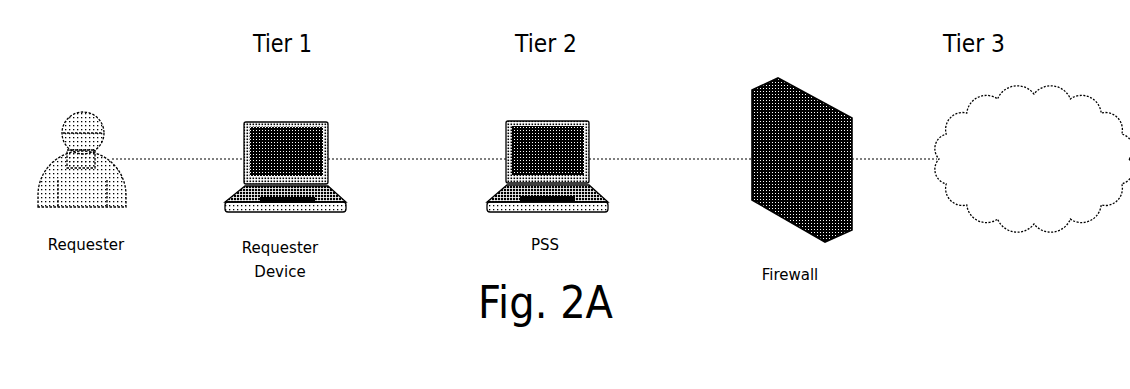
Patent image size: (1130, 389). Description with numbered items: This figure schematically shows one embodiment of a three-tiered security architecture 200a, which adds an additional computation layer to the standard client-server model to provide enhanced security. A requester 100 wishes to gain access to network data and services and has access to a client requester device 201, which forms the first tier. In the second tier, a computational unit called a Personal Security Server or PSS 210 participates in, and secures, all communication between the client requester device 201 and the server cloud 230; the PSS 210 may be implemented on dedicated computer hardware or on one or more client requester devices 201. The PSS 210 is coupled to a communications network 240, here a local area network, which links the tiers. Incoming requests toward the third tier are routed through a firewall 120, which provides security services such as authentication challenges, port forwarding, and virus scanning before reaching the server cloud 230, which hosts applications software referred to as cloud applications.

The three-tiered security architecture 200a is at (166, 36).
The requester 100 is at (82, 111).
The client requester device 201 is at (279, 121).
The communications network 240 is at (372, 153).
The Personal Security Server (PSS) 210 is at (548, 120).
The firewall 120 is at (778, 76).
The server cloud 230 is at (1038, 91).